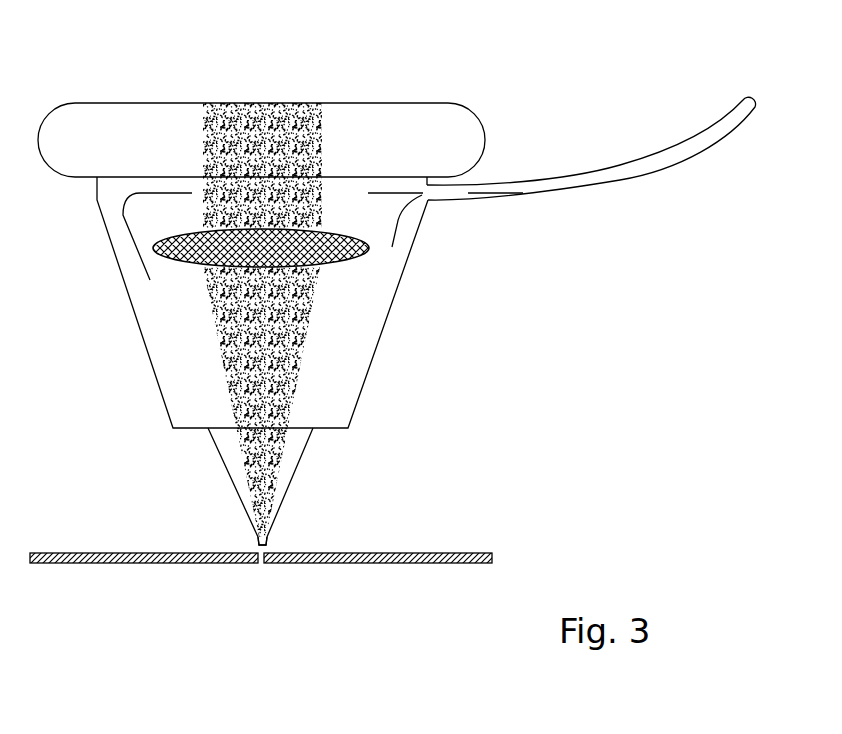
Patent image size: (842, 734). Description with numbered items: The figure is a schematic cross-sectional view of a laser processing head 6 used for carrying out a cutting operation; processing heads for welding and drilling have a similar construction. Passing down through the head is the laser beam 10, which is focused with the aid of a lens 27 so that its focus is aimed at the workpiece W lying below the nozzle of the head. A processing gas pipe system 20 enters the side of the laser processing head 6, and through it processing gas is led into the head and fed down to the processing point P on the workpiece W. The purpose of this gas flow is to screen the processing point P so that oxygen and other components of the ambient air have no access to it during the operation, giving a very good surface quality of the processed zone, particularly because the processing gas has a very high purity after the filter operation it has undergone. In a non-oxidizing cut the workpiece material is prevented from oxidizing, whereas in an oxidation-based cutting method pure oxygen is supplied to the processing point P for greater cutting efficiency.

The laser processing head 6 is at (152, 80).
The laser beam 10 is at (342, 119).
The processing gas pipe system 20 is at (535, 198).
The lens 27 is at (366, 270).
The processing point P is at (280, 542).
The workpiece W is at (463, 553).